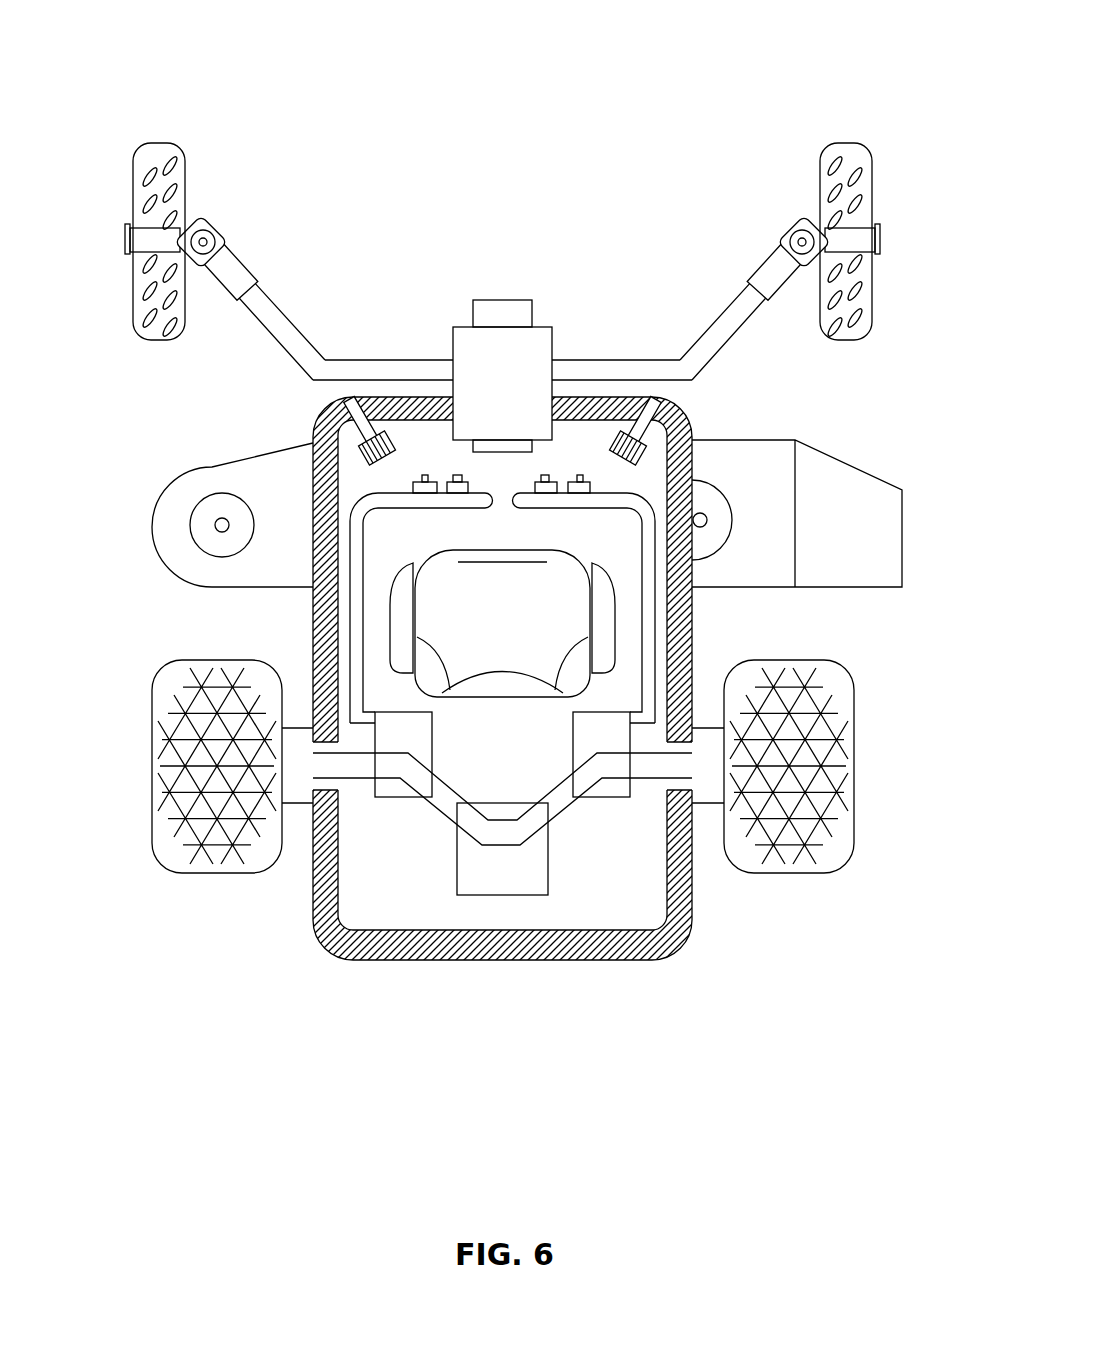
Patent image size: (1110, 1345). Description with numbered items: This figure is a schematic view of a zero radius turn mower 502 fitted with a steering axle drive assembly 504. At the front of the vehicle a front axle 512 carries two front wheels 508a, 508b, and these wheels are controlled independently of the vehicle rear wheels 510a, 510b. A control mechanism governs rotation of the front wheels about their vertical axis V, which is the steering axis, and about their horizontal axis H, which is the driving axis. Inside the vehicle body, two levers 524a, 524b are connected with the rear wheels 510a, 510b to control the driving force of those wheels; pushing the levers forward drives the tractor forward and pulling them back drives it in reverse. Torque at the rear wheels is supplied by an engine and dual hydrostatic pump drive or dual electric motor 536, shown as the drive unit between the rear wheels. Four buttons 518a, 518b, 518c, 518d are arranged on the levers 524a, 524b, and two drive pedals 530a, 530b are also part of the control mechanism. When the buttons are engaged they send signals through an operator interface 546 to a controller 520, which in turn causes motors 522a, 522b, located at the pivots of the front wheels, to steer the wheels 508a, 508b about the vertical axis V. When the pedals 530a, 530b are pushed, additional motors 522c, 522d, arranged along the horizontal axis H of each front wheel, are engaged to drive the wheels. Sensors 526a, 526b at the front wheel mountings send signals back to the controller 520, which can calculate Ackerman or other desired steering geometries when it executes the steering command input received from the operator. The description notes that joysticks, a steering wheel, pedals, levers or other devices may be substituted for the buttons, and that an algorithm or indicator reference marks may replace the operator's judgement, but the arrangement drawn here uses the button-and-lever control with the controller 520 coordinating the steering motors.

The mower 502 is at (882, 632).
The steering axle drive assembly 504 is at (590, 90).
The front wheel 508a is at (158, 143).
The front wheel 508b is at (848, 143).
The rear wheel 510a is at (210, 873).
The rear wheel 510b is at (795, 873).
The front axle 512 is at (358, 372).
The button 518a is at (457, 483).
The button 518b is at (425, 480).
The button 518c is at (580, 480).
The button 518d is at (550, 490).
The controller 520 is at (507, 294).
The motor 522a is at (494, 182).
The motor 522b is at (797, 215).
The additional motor 522c is at (131, 227).
The additional motor 522d is at (878, 228).
The lever 524a is at (355, 603).
The lever 524b is at (648, 582).
The sensor 526a is at (199, 262).
The sensor 526b is at (806, 262).
The drive pedal 530a is at (363, 443).
The drive pedal 530b is at (640, 443).
The engine and dual hydrostatic pump drive or dual electric motor 536 is at (472, 884).
The operator interface 546 is at (505, 315).
The horizontal axis H is at (126, 240).
The vertical axis V is at (207, 218).